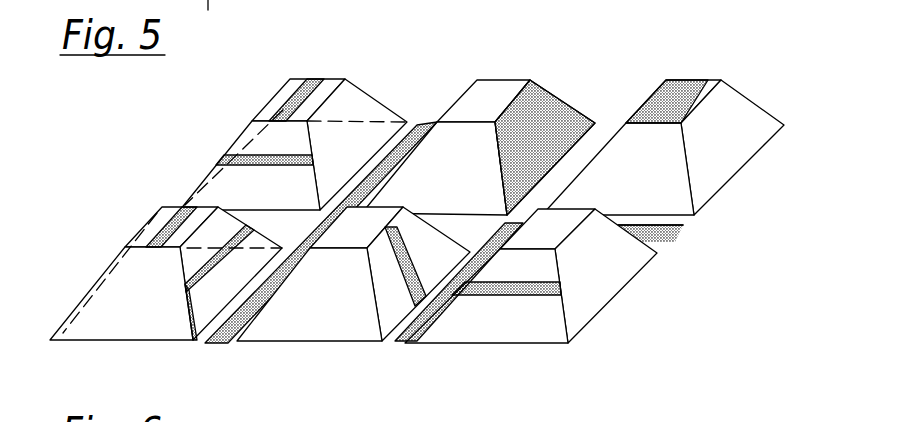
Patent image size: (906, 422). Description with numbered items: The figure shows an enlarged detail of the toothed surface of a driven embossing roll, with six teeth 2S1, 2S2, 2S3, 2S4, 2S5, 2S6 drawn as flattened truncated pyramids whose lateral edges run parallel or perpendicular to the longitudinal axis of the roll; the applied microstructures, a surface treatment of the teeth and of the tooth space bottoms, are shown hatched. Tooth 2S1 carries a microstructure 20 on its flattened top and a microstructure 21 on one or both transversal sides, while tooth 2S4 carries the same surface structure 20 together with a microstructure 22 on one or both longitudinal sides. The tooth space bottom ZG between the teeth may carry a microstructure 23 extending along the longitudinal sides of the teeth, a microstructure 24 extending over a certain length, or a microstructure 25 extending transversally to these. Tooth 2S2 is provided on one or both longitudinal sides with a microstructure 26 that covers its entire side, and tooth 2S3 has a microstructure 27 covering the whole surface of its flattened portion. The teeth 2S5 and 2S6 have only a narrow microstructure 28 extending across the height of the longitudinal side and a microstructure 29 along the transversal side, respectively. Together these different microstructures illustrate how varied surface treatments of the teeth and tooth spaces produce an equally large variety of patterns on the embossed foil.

The tooth 2S1 is at (358, 108).
The tooth 2S2 is at (552, 93).
The tooth 2S3 is at (684, 82).
The tooth 2S4 is at (88, 285).
The tooth 2S5 is at (310, 343).
The tooth 2S6 is at (493, 343).
The microstructure 20 is at (305, 83).
The microstructure 21 is at (222, 155).
The microstructure 22 is at (197, 341).
The microstructure 23 is at (417, 125).
The microstructure 24 is at (413, 335).
The microstructure 25 is at (660, 238).
The microstructure 26 is at (557, 125).
The microstructure 27 is at (706, 83).
The microstructure 28 is at (400, 268).
The microstructure 29 is at (545, 296).
The tooth space bottom ZG is at (692, 226).